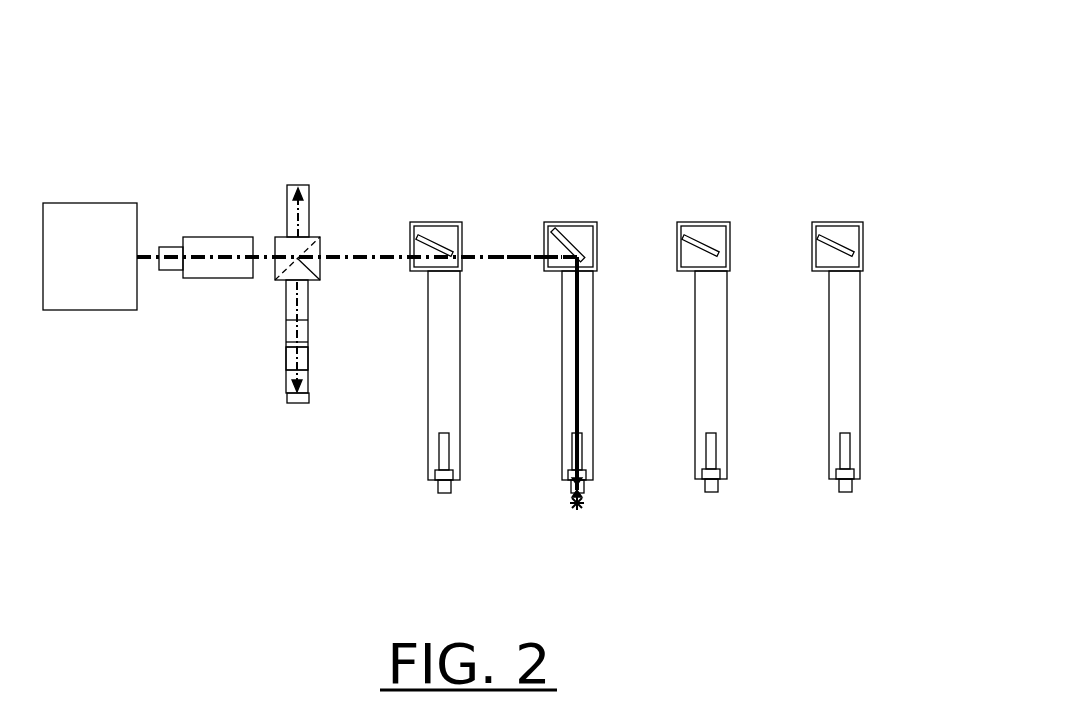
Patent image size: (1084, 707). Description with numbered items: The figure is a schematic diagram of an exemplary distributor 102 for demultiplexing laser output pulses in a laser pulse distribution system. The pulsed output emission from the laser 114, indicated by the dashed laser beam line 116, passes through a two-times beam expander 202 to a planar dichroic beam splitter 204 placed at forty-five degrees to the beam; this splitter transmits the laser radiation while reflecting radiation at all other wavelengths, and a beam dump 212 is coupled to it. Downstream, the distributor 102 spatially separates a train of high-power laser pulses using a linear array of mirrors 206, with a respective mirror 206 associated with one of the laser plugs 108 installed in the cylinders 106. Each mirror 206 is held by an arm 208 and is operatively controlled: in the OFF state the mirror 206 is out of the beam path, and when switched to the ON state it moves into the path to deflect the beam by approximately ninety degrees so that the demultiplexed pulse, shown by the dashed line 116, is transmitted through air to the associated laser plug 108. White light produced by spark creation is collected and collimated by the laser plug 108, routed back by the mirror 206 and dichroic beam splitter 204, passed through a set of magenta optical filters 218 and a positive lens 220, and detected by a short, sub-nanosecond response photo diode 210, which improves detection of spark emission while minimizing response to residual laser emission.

The distributor 102 is at (653, 105).
The cylinder 106 is at (664, 379).
The laser plug 108 is at (447, 458).
The laser 114 is at (90, 256).
The laser beam 116 is at (217, 253).
The 2× beam expander 202 is at (210, 278).
The dichroic beam splitter 204 is at (297, 258).
The mirror 206 is at (413, 266).
The arm 208 is at (900, 182).
The photo diode 210 is at (293, 405).
The beam dump 212 is at (296, 183).
The set of magenta optical filters 218 is at (286, 331).
The positive lens 220 is at (308, 357).